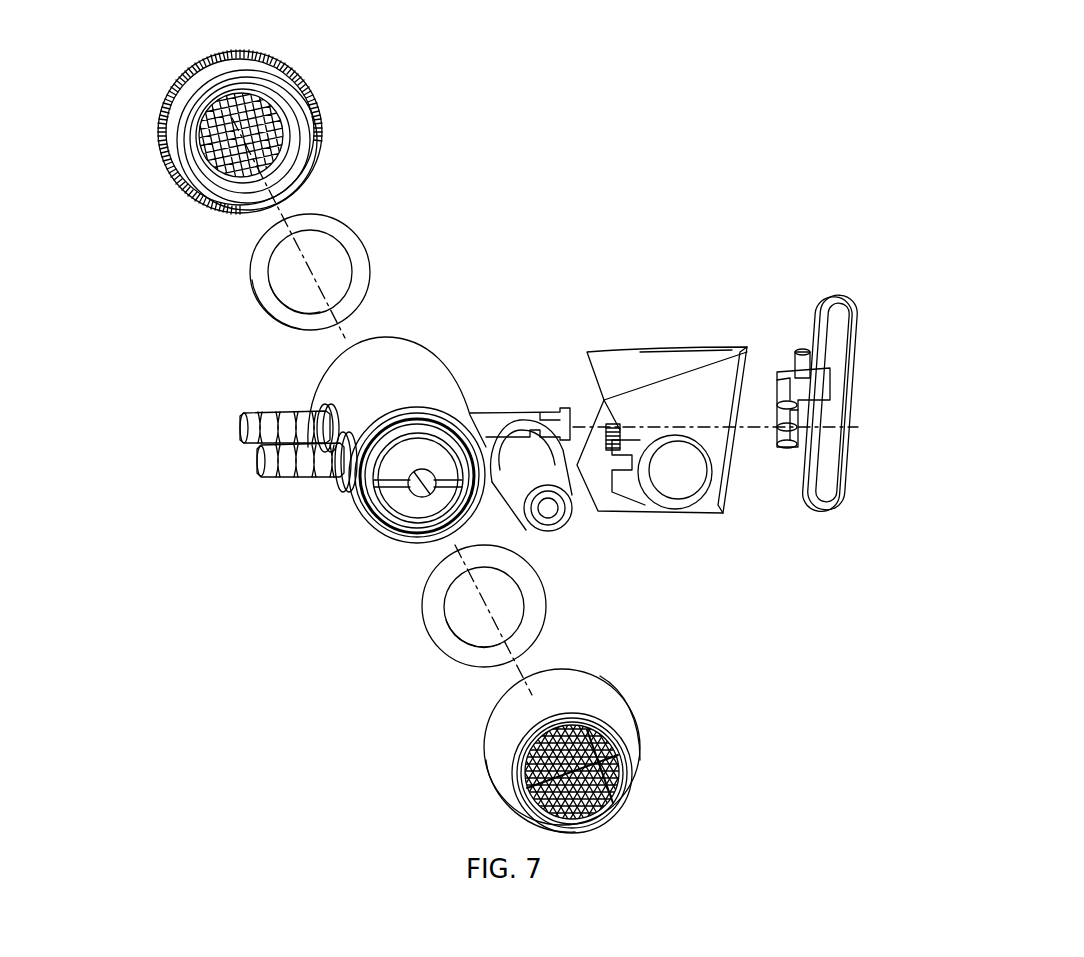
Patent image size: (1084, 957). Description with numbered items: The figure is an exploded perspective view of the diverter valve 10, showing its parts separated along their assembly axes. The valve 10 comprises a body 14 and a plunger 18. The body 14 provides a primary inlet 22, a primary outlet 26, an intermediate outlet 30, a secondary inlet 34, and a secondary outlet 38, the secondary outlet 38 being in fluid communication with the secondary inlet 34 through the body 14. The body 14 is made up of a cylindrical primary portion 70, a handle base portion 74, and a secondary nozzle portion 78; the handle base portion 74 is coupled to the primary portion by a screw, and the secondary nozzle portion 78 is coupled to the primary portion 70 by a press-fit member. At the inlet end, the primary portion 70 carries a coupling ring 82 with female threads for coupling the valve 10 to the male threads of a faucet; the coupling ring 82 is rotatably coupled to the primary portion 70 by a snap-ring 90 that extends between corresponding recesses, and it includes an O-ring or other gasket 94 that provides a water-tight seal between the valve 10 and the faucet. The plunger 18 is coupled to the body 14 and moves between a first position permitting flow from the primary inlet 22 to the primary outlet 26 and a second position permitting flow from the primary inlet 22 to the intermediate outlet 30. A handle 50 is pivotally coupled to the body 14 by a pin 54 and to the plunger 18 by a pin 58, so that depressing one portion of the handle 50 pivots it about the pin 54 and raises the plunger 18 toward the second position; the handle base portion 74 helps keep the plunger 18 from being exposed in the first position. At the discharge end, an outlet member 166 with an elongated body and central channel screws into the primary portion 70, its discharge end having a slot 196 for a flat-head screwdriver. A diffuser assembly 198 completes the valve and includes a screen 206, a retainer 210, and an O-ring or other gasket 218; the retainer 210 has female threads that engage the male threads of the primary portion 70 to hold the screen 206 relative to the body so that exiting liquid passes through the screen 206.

The diverter valve 10 is at (674, 122).
The primary inlet 22 is at (196, 40).
The coupling ring 82 is at (312, 120).
The snap-ring 90 is at (290, 167).
The gasket 94 is at (350, 242).
The body 14 is at (399, 366).
The cylindrical primary portion 70 is at (337, 380).
The intermediate outlet 30 is at (240, 425).
The secondary inlet 34 is at (255, 458).
The plunger 18 is at (498, 414).
The secondary nozzle portion 78 is at (505, 497).
The secondary outlet 38 is at (552, 510).
The slot 196 is at (385, 484).
The outlet member 166 is at (412, 508).
The handle base portion 74 is at (688, 378).
The pin 58 is at (790, 440).
The pin 54 is at (803, 350).
The handle 50 is at (856, 308).
The gasket 218 is at (440, 640).
The diffuser assembly 198 is at (642, 775).
The retainer 210 is at (625, 705).
The screen 206 is at (603, 790).
The primary outlet 26 is at (607, 852).